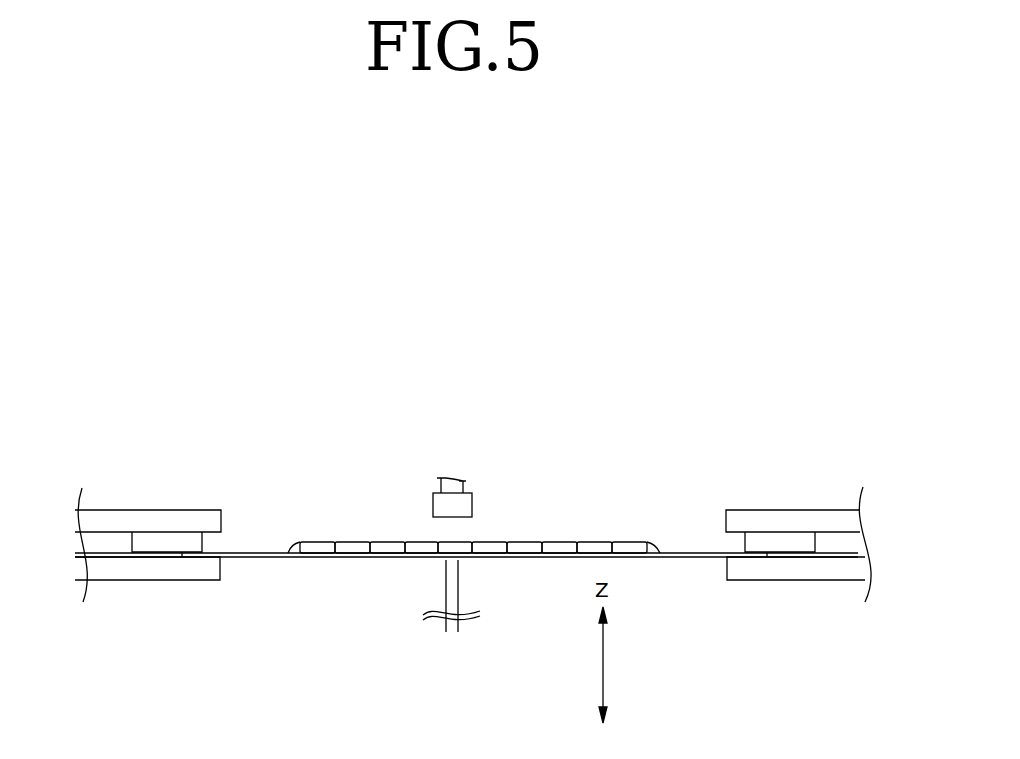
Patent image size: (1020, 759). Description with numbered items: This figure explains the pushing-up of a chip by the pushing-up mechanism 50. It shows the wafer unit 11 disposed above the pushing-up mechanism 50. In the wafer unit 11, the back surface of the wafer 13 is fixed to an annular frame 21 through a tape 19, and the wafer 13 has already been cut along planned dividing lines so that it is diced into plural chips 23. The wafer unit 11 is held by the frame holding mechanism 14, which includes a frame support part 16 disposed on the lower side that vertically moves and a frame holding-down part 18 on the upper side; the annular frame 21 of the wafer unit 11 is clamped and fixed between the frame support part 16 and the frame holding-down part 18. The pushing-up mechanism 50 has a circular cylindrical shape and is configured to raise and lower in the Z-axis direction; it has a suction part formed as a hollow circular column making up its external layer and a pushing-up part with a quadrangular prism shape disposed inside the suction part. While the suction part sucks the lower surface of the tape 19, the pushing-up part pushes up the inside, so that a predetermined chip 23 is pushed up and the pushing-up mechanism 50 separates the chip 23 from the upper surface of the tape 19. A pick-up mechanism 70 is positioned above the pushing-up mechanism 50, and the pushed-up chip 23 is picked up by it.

The wafer unit 11 is at (466, 555).
The wafer 13 is at (474, 510).
The frame holding mechanism 14 is at (473, 547).
The frame support part 16 is at (745, 572).
The frame holding-down part 18 is at (748, 520).
The tape 19 is at (327, 558).
The annular frame 21 is at (787, 545).
The chip 23 is at (463, 548).
The pushing-up mechanism 50 is at (494, 596).
The pick-up mechanism 70 is at (411, 494).